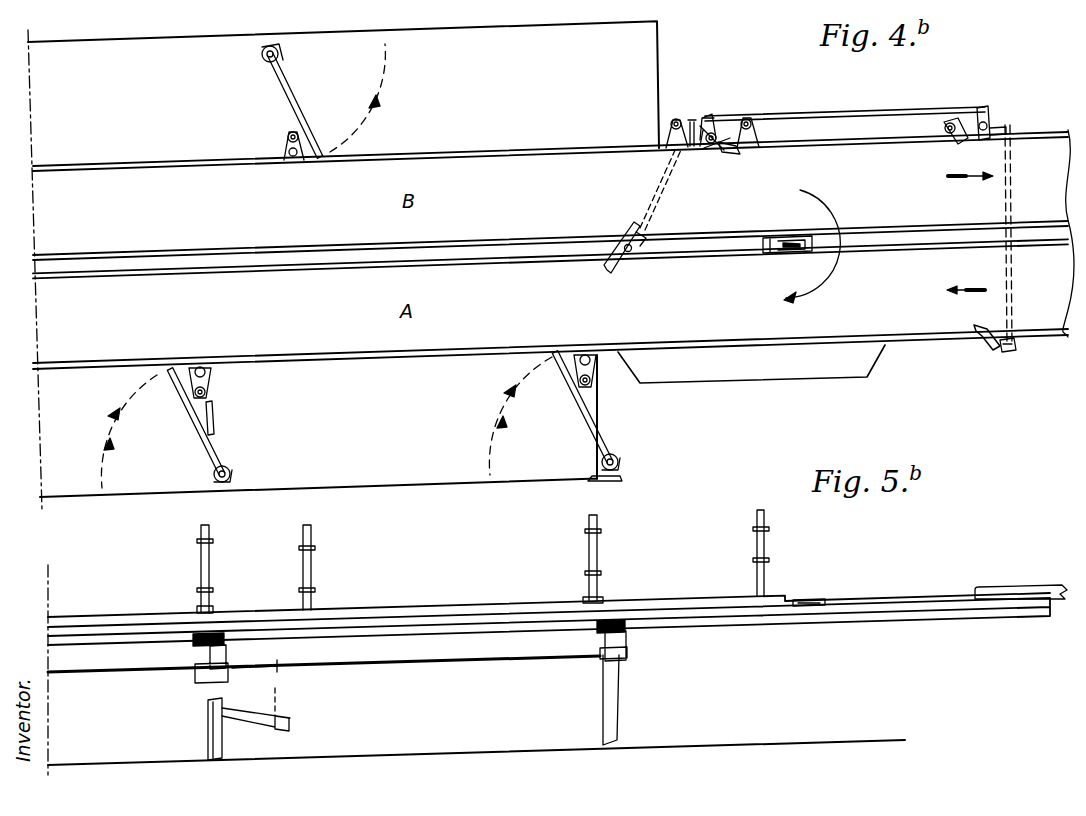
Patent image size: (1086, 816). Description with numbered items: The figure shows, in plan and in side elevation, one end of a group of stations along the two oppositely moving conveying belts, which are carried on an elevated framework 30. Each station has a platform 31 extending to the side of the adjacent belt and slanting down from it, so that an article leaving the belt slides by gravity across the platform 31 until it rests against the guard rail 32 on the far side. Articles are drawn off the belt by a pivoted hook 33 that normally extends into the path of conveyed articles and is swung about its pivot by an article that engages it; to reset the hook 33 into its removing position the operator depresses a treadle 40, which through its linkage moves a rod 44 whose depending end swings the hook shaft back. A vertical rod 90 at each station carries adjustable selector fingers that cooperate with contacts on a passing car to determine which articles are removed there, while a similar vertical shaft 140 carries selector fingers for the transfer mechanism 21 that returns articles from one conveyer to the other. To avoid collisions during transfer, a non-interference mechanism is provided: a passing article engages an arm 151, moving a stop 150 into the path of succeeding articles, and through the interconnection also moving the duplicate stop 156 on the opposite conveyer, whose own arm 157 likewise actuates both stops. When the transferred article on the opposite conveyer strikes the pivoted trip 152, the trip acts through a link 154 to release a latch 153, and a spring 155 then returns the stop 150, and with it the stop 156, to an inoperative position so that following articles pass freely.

In FIG. 4b, the transfer mechanism 21 is at (801, 255).
In FIG. 5b, the transfer mechanism 21 is at (822, 600).
In FIG. 5b, the elevated framework 30 is at (702, 622).
In FIG. 4b, the platform 31 is at (318, 436).
In FIG. 4b, the guard rail 32 is at (383, 488).
In FIG. 4b, the pivoted hook 33 is at (285, 85).
In FIG. 5b, the treadle 40 is at (242, 722).
In FIG. 5b, the rod 44 is at (380, 668).
In FIG. 4b, the vertical rod 90 is at (286, 136).
In FIG. 5b, the vertical rod 90 is at (212, 567).
In FIG. 4b, the vertical shaft 140 is at (748, 118).
In FIG. 5b, the vertical shaft 140 is at (766, 551).
In FIG. 4b, the stop 150 is at (706, 146).
In FIG. 4b, the arm 151 is at (728, 152).
In FIG. 4b, the pivoted trip 152 is at (618, 276).
In FIG. 4b, the latch 153 is at (680, 120).
In FIG. 4b, the link 154 is at (656, 202).
In FIG. 4b, the spring 155 is at (722, 118).
In FIG. 4b, the stop 156 is at (1008, 350).
In FIG. 4b, the arm 157 is at (986, 344).